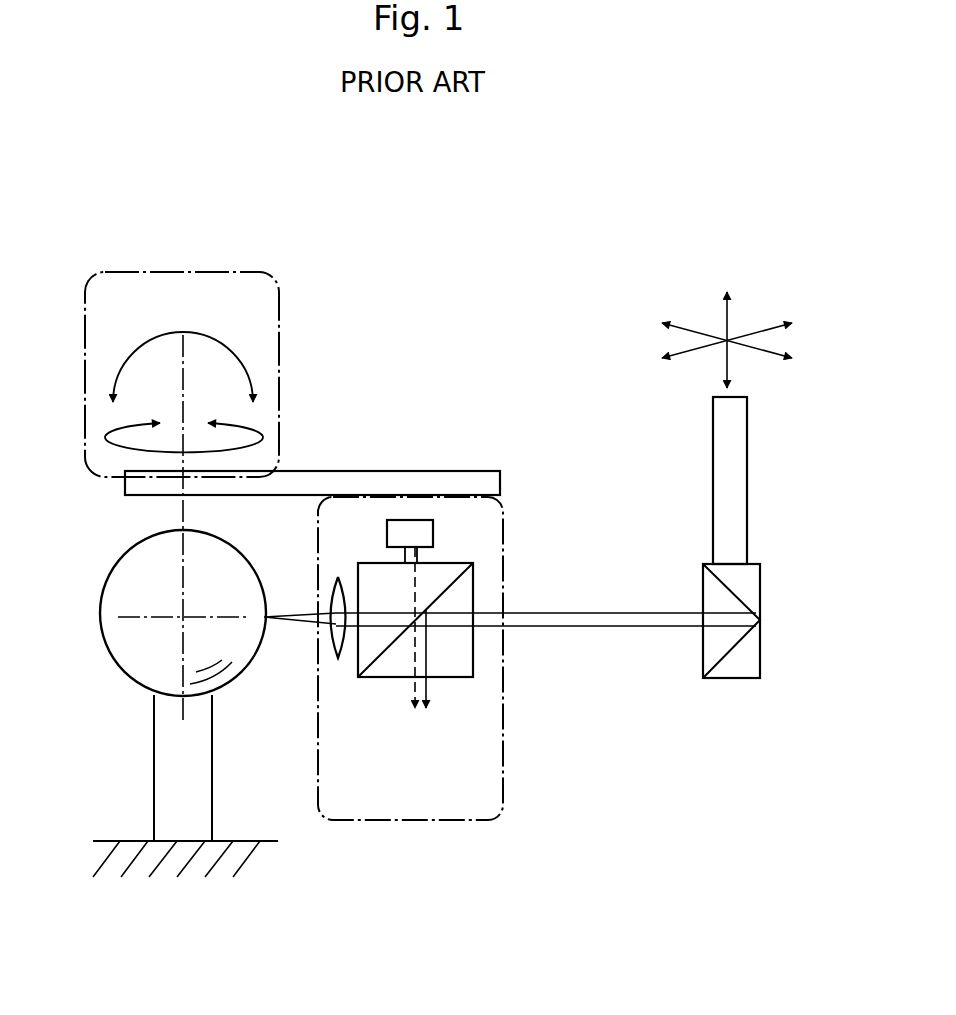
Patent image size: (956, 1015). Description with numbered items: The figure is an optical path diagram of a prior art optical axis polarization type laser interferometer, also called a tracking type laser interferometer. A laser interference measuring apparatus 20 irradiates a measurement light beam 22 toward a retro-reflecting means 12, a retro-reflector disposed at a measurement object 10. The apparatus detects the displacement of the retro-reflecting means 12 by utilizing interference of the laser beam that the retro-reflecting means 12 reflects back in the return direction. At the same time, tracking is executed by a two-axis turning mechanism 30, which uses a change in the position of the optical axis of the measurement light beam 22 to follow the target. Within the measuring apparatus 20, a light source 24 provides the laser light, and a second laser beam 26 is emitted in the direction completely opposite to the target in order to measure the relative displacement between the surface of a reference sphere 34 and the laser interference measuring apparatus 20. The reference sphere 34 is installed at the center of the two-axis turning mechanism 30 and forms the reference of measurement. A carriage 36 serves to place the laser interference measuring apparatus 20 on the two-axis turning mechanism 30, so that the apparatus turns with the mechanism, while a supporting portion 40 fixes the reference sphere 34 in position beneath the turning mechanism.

The measurement object 10 is at (743, 462).
The retro-reflecting means 12 is at (762, 665).
The laser interference measuring apparatus 20 is at (420, 822).
The measurement light beam 22 is at (597, 628).
The light source 24 is at (425, 540).
The laser beam 26 is at (305, 624).
The two-axis turning mechanism 30 is at (203, 272).
The reference sphere 34 is at (115, 657).
The carriage 36 is at (345, 472).
The supporting portion 40 is at (154, 772).